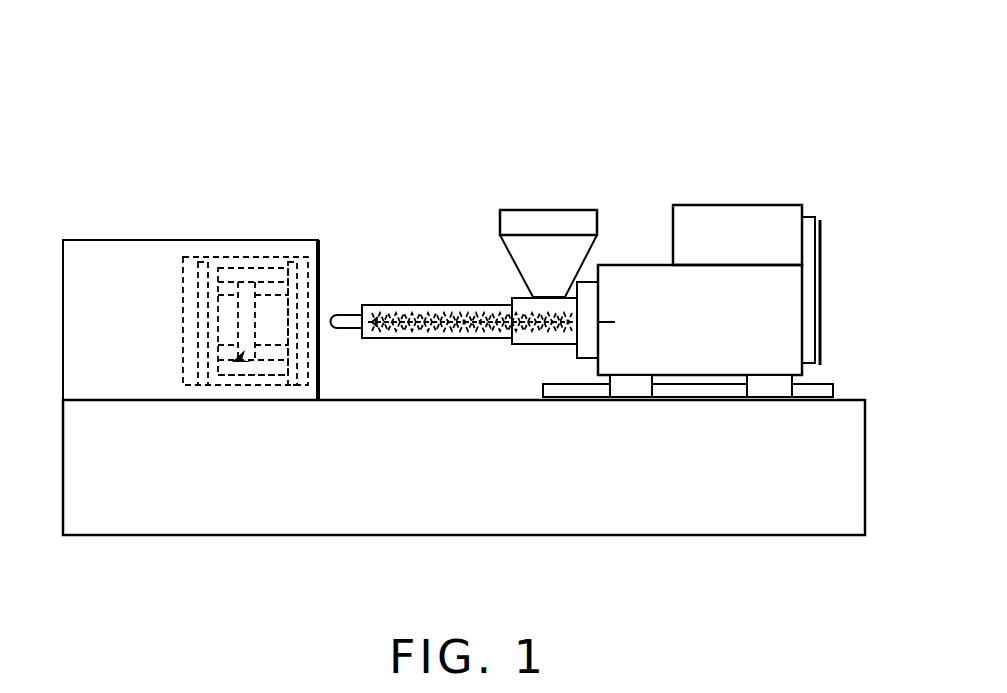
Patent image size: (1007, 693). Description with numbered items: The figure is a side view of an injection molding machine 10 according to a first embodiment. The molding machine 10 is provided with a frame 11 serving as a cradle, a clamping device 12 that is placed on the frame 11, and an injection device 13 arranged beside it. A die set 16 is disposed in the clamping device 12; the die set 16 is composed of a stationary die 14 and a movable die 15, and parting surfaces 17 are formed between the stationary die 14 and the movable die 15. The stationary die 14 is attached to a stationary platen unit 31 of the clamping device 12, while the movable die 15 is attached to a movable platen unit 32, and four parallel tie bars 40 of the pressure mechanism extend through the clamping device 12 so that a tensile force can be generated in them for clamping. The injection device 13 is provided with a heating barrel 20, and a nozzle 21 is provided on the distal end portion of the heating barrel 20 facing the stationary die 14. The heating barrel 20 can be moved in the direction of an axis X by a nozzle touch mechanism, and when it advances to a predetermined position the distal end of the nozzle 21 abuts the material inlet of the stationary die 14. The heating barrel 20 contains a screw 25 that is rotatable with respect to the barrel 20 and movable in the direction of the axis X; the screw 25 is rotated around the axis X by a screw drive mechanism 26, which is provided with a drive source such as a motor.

The injection molding machine 10 is at (570, 93).
The frame 11 is at (495, 515).
The clamping device 12 is at (260, 152).
The injection device 13 is at (822, 178).
The stationary die 14 is at (272, 262).
The movable die 15 is at (228, 262).
The die set 16 is at (232, 380).
The parting surfaces 17 is at (283, 395).
The heating barrel 20 is at (437, 305).
The nozzle 21 is at (340, 315).
The screw 25 is at (445, 333).
The screw drive mechanism 26 is at (728, 215).
The stationary platen unit 31 is at (312, 262).
The movable platen unit 32 is at (195, 262).
The tie bars 40 is at (248, 262).
The axis X is at (392, 326).